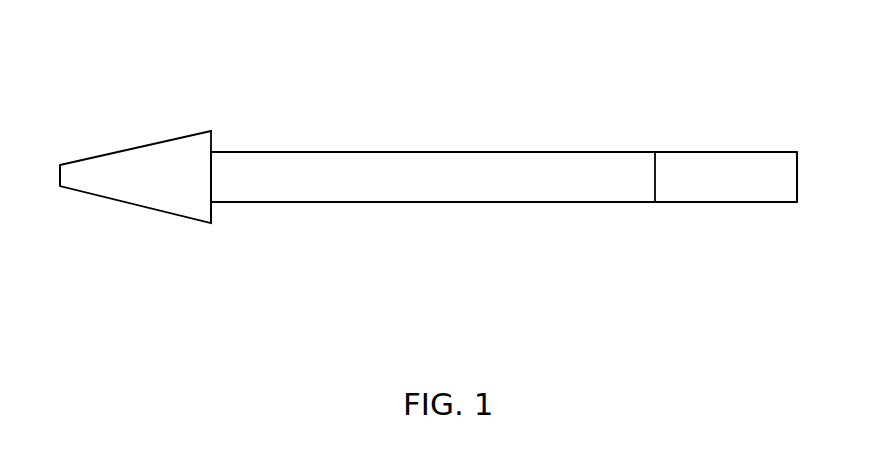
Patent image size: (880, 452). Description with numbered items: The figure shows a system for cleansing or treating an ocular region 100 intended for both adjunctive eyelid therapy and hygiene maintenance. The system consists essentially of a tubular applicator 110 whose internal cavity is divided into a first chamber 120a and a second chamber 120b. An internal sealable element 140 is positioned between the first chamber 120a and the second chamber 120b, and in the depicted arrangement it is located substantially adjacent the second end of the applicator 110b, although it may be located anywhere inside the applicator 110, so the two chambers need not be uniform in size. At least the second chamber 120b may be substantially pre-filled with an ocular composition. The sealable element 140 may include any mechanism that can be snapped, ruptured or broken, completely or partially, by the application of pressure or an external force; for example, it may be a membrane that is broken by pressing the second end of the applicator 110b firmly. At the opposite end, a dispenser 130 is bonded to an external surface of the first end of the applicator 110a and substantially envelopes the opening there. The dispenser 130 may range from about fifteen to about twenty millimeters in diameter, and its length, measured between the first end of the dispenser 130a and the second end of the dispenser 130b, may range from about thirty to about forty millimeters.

The system for cleansing or treating an ocular region 100 is at (423, 57).
The tubular applicator 110 is at (545, 202).
The first end of the applicator 110a is at (222, 149).
The second end of the applicator 110b is at (795, 150).
The first chamber 120a is at (375, 185).
The second chamber 120b is at (727, 185).
The dispenser 130 is at (147, 188).
The first end of the dispenser 130a is at (60, 185).
The second end of the dispenser 130b is at (212, 212).
The sealable element 140 is at (656, 150).